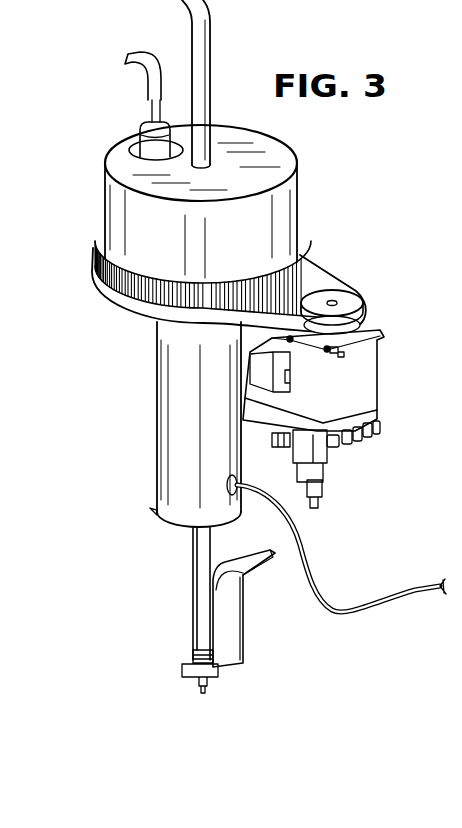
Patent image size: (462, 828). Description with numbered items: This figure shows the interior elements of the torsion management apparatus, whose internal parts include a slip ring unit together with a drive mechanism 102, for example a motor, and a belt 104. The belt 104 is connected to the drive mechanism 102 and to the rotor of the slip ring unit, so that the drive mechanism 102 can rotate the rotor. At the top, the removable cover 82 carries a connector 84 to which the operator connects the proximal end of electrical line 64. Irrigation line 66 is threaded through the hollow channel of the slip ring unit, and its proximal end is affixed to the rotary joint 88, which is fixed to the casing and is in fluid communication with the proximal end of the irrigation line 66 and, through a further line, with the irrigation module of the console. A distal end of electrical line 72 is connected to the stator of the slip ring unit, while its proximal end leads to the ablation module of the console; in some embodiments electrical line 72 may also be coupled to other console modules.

The electrical line 64 is at (143, 66).
The irrigation line 66 is at (203, 17).
The electrical line 72 is at (416, 588).
The removable cover 82 is at (290, 218).
The connector 84 is at (147, 132).
The rotary joint 88 is at (192, 654).
The drive mechanism 102 is at (362, 367).
The belt 104 is at (326, 283).